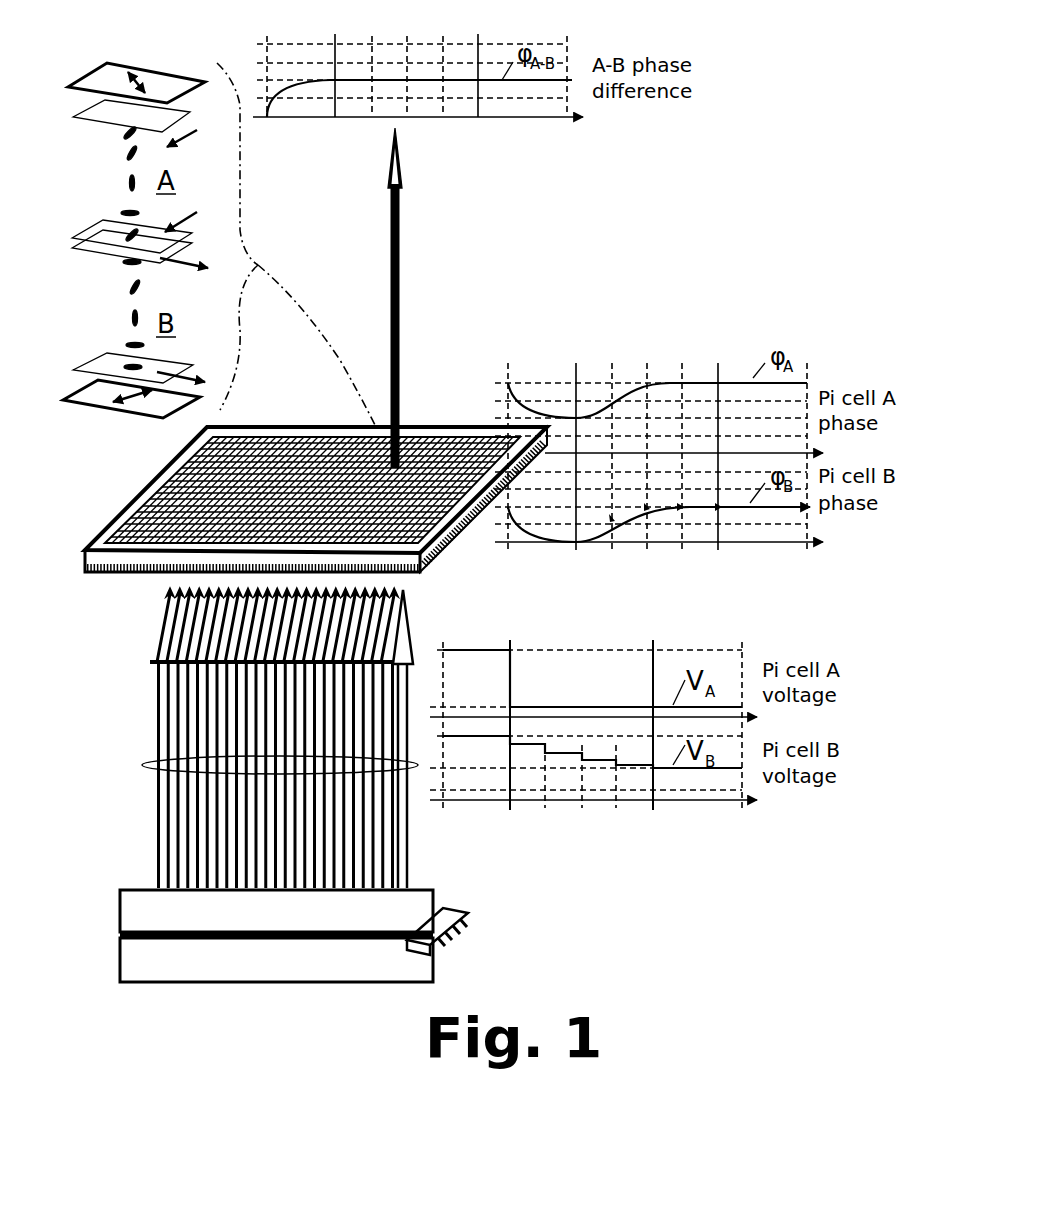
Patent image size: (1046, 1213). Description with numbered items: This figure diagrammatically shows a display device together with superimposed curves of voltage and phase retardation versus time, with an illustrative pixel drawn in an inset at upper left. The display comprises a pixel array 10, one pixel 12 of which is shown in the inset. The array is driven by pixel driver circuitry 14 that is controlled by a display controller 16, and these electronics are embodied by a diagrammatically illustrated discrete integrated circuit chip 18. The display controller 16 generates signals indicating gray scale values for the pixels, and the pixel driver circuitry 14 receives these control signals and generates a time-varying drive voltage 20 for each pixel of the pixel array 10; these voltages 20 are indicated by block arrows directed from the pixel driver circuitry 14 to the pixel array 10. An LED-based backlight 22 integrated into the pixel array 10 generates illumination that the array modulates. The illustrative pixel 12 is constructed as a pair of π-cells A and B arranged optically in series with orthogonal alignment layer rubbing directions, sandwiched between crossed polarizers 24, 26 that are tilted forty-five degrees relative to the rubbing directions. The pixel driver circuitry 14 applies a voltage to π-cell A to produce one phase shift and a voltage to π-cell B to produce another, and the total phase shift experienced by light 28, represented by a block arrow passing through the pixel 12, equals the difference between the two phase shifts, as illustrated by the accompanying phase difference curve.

The pixel array 10 is at (165, 517).
The pixel 12 is at (290, 285).
The pixel driver circuitry 14 is at (120, 915).
The display controller 16 is at (120, 960).
The integrated circuit chip 18 is at (448, 910).
The drive voltage 20 is at (142, 765).
The backlight 22 is at (445, 553).
The polarizer 24 is at (142, 417).
The polarizer 26 is at (153, 70).
The light 28 is at (400, 258).